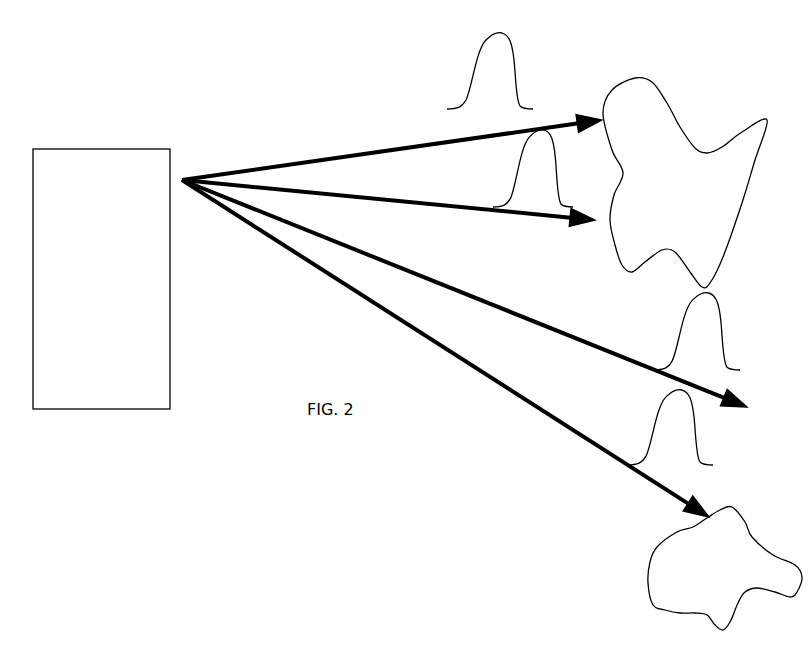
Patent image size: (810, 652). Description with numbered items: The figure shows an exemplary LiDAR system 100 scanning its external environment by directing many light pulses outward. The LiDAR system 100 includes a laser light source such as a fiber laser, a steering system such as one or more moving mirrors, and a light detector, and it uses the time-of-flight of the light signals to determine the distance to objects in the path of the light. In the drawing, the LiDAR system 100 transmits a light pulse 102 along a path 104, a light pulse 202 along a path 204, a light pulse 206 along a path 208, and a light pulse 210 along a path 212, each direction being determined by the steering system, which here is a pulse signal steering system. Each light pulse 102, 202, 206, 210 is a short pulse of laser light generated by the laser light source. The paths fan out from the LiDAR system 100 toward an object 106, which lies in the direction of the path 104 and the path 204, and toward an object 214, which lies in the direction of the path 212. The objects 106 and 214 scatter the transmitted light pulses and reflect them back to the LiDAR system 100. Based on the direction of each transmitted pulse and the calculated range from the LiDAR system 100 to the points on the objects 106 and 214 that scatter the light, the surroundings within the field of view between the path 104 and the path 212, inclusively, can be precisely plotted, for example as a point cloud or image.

The LiDAR system 100 is at (79, 214).
The light pulse 102 is at (489, 69).
The path 104 is at (390, 147).
The object 106 is at (679, 196).
The light pulse 202 is at (520, 168).
The path 204 is at (455, 205).
The light pulse 206 is at (686, 331).
The path 208 is at (448, 285).
The light pulse 210 is at (658, 427).
The path 212 is at (530, 398).
The object 214 is at (693, 577).